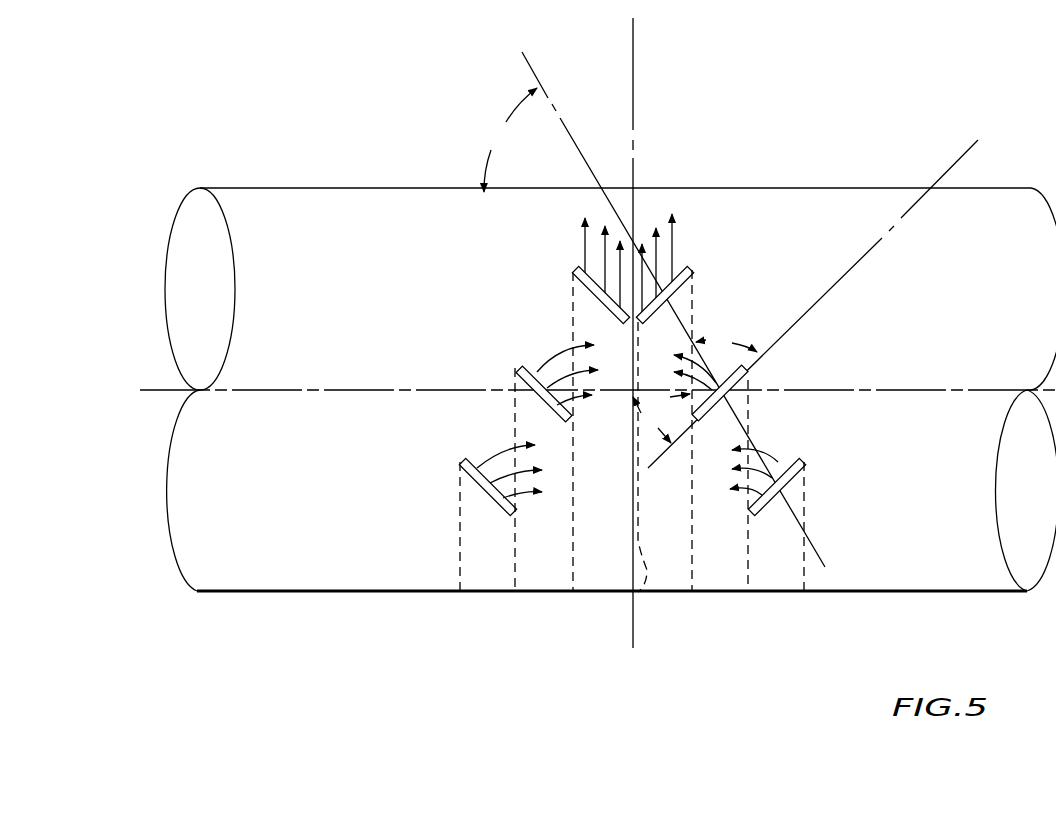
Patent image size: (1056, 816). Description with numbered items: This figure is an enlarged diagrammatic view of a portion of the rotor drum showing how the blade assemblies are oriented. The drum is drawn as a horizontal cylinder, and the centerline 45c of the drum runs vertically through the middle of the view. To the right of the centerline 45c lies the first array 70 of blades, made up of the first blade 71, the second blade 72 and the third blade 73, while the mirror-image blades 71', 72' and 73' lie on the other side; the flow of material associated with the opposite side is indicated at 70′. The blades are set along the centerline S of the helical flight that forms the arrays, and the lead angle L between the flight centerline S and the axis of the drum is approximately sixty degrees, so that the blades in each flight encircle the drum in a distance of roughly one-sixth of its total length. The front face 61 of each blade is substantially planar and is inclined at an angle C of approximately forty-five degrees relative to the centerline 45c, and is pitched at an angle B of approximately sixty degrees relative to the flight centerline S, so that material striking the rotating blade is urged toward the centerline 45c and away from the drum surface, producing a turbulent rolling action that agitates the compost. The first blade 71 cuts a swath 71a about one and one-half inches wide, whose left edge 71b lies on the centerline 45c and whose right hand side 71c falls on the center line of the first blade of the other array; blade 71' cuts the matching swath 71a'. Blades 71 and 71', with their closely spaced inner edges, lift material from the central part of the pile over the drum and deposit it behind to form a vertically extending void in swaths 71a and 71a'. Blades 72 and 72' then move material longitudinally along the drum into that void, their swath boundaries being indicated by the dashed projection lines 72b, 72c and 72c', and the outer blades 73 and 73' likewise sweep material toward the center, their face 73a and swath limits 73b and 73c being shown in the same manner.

The centerline of the drum 45c is at (633, 48).
The centerline of the helical array S is at (577, 143).
The lead angle L is at (510, 140).
The front face of blade 61 is at (690, 267).
The first array of blades 70 is at (648, 199).
The fluid flow 70′ is at (590, 199).
The first blade of the first array 71 is at (694, 294).
The first blade on opposite side 71' is at (567, 425).
The second blade of the first array 72 is at (743, 388).
The second blade on opposite side 72' is at (526, 383).
The lower deflector vane 73 is at (799, 482).
The lower deflector vane (opposite side) 73' is at (468, 518).
The pitch angle B is at (726, 346).
The inclination angle C is at (652, 420).
The swath of first blade 71a is at (618, 626).
The swath of blade 71' 71a' is at (563, 526).
The left edge of swath 71b is at (628, 600).
The right hand side of swath 71c is at (690, 540).
The vane projection line 72b is at (692, 572).
The vane projection line 72c is at (767, 539).
The vane projection line 72c' is at (506, 513).
The vane face 73a is at (780, 528).
The vane projection line 73b is at (748, 565).
The vane projection line 73c is at (803, 562).